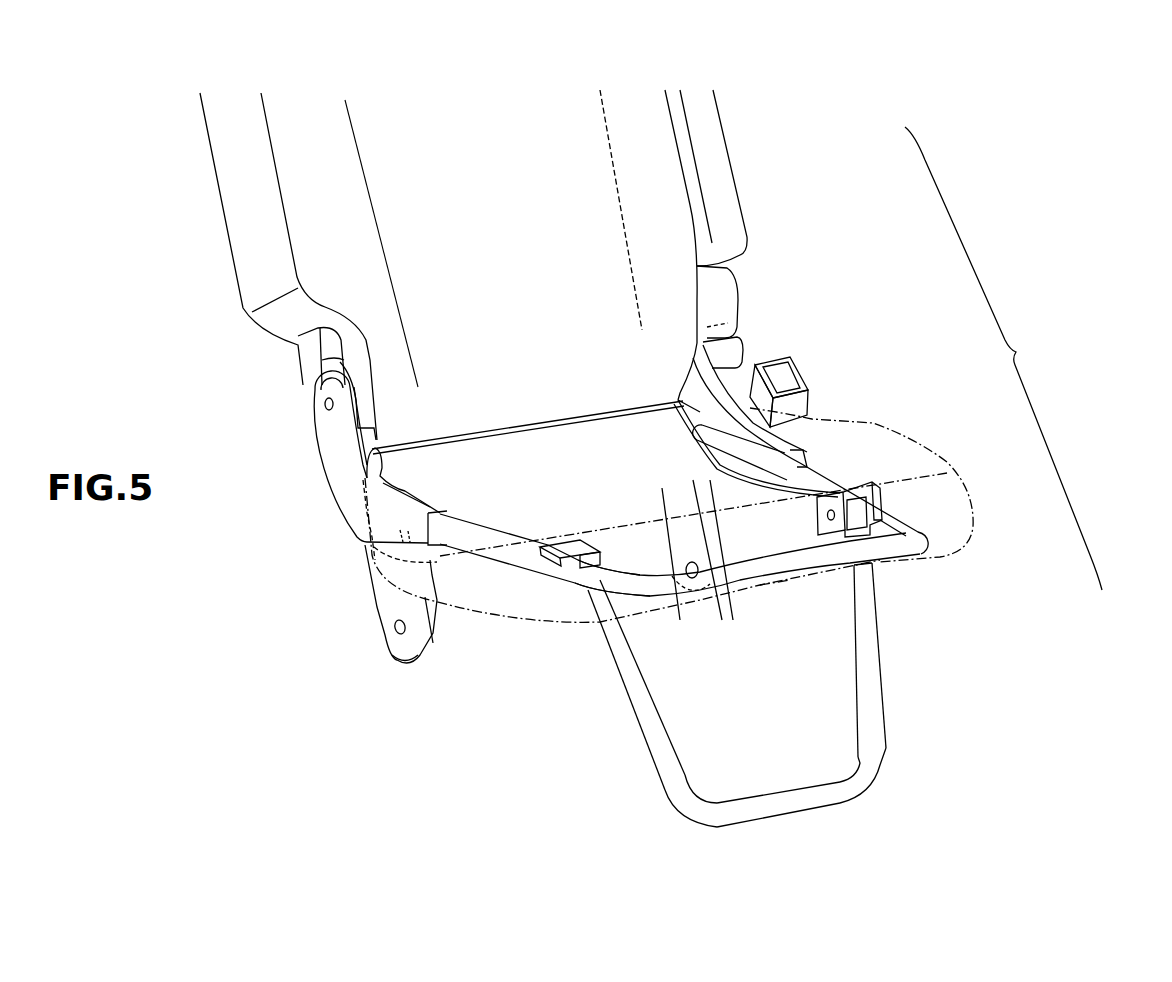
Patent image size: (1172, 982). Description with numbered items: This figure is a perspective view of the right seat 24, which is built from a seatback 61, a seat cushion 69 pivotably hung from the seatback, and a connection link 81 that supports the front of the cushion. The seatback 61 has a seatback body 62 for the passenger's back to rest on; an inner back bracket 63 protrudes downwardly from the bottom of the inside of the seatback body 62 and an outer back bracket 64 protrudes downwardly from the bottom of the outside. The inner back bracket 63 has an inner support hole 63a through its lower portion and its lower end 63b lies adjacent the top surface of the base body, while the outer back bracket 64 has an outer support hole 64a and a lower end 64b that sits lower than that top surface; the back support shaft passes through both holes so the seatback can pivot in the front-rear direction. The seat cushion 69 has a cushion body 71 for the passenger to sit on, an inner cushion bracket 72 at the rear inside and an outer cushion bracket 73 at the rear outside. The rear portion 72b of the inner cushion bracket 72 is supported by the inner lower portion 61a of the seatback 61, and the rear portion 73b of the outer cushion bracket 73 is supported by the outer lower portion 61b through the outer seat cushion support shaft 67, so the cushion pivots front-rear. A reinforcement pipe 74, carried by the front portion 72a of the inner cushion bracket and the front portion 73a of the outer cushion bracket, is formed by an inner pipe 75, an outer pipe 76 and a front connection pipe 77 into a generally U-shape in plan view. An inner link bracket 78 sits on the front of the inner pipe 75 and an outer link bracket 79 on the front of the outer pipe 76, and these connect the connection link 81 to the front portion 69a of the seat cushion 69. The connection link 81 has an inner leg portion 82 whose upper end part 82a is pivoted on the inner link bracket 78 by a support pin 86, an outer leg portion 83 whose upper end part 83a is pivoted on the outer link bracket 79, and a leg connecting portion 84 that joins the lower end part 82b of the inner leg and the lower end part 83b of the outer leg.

The right seat 24 is at (1003, 358).
The seatback 61 is at (690, 210).
The inner lower portion of the seatback 61a is at (700, 316).
The outer lower portion of the seatback 61b is at (360, 366).
The seatback body 62 is at (485, 143).
The inner back bracket 63 is at (660, 496).
The inner support hole 63a is at (683, 580).
The lower end of the inner back bracket 63b is at (707, 602).
The outer back bracket 64 is at (380, 558).
The outer support hole 64a is at (392, 627).
The lower end of the outer back bracket 64b is at (406, 660).
The outer seat cushion support shaft 67 is at (323, 404).
The seat cushion 69 is at (876, 426).
The front portion of the seat cushion 69a is at (775, 592).
The cushion body 71 is at (808, 423).
The inner cushion bracket 72 is at (717, 390).
The front portion of the inner cushion bracket 72a is at (803, 450).
The rear portion of the inner cushion bracket 72b is at (738, 337).
The outer cushion bracket 73 is at (340, 497).
The front portion of the outer cushion bracket 73a is at (403, 537).
The rear portion of the outer cushion bracket 73b is at (330, 435).
The reinforcement pipe 74 is at (600, 582).
The inner pipe 75 is at (905, 515).
The outer pipe 76 is at (517, 553).
The front connection pipe 77 is at (793, 573).
The inner link bracket 78 is at (840, 490).
The outer link bracket 79 is at (563, 542).
The connection link 81 is at (769, 659).
The inner leg portion 82 is at (880, 700).
The upper end part of the inner leg portion 82a is at (904, 577).
The lower end part of the inner leg portion 82b is at (885, 778).
The outer leg portion 83 is at (641, 720).
The upper end part of the outer leg portion 83a is at (567, 562).
The lower end part of the outer leg portion 83b is at (680, 800).
The leg connecting portion 84 is at (812, 803).
The support pin 86 is at (827, 516).